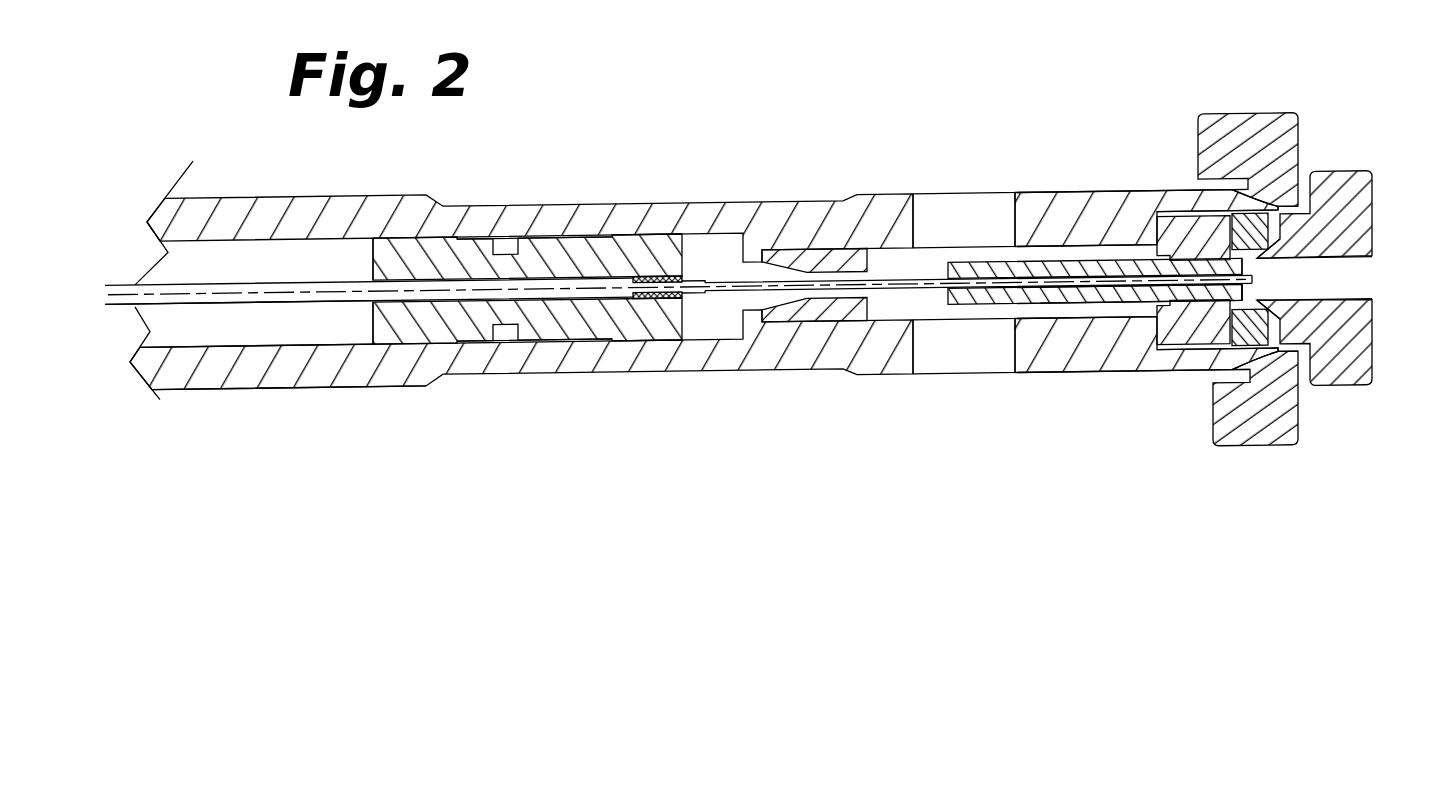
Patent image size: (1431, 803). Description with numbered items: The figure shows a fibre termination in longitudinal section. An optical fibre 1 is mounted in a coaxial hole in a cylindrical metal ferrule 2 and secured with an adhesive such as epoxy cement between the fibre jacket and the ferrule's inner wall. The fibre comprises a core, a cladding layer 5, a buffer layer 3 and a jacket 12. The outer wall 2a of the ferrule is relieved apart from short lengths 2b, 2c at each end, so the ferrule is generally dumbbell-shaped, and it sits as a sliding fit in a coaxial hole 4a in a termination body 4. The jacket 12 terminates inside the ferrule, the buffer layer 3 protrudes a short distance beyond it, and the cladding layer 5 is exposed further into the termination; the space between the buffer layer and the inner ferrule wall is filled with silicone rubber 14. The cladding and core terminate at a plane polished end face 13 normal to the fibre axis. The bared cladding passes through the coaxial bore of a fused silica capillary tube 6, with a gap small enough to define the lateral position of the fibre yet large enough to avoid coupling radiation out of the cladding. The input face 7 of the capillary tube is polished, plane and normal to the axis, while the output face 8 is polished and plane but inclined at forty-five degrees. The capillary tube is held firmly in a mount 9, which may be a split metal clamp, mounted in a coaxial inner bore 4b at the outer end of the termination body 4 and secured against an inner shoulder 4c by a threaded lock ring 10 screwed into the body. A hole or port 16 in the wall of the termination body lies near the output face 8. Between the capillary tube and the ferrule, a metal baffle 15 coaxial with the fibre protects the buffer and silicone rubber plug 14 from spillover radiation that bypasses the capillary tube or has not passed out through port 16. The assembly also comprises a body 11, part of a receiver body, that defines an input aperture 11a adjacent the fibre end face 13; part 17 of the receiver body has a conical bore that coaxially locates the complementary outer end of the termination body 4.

The optical fibre 1 is at (268, 283).
The cylindrical metal ferrule 2 is at (588, 318).
The outer wall of the ferrule 2a is at (478, 238).
The short unrelieved length of ferrule 2b is at (648, 238).
The short unrelieved length of ferrule 2c is at (403, 248).
The buffer layer 3 is at (702, 278).
The termination body 4 is at (767, 367).
The coaxial hole in termination body 4a is at (395, 347).
The coaxial inner bore 4b is at (1183, 210).
The inner shoulder 4c is at (1155, 333).
The cladding layer 5 is at (909, 276).
The fused silica capillary tube 6 is at (1083, 295).
The input face of capillary tube 7 is at (1256, 291).
The output face of capillary tube 8 is at (983, 295).
The mount 9 is at (1170, 228).
The threaded lock ring 10 is at (1249, 217).
The body 11 is at (1338, 204).
The input aperture 11a is at (1286, 268).
The jacket 12 is at (212, 306).
The polished end face 13 is at (1257, 277).
The silicone rubber 14 is at (665, 298).
The metal baffle 15 is at (810, 302).
The port 16 is at (1013, 183).
The part of receiver body 17 is at (1256, 451).